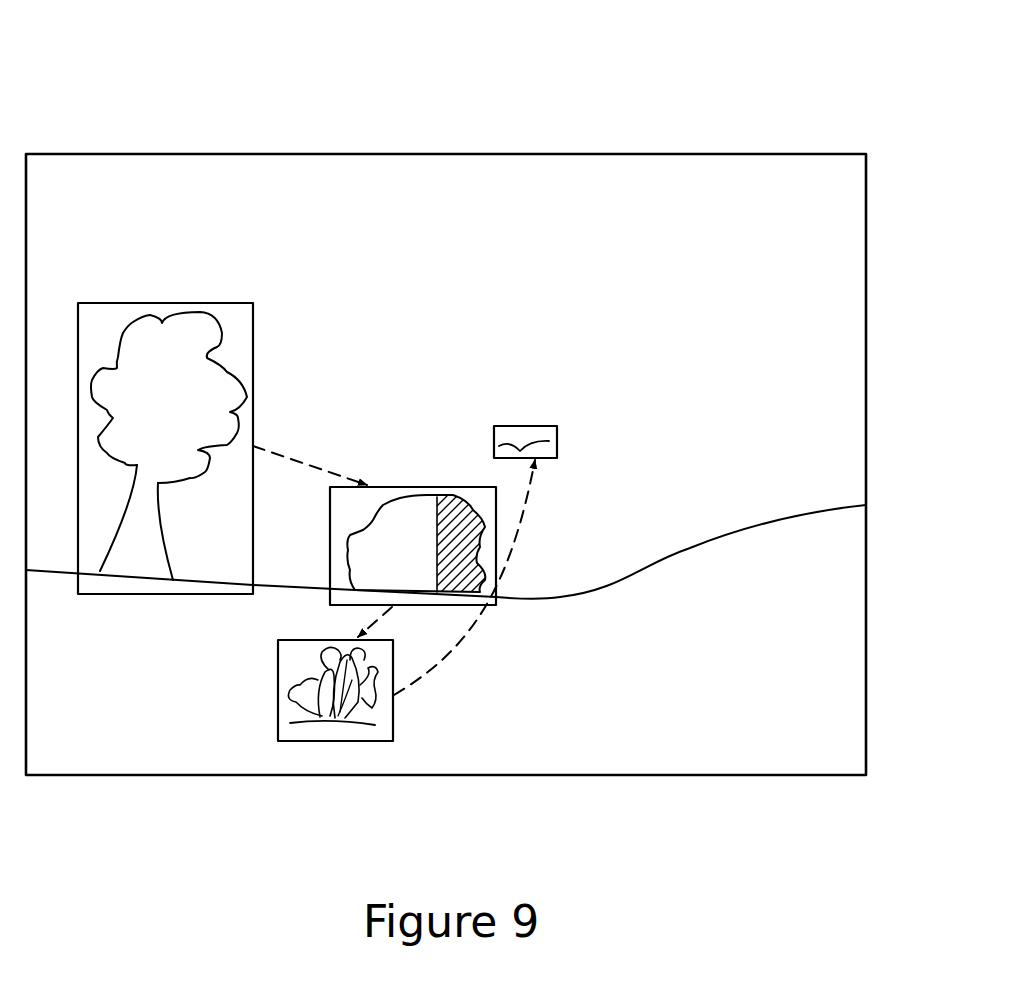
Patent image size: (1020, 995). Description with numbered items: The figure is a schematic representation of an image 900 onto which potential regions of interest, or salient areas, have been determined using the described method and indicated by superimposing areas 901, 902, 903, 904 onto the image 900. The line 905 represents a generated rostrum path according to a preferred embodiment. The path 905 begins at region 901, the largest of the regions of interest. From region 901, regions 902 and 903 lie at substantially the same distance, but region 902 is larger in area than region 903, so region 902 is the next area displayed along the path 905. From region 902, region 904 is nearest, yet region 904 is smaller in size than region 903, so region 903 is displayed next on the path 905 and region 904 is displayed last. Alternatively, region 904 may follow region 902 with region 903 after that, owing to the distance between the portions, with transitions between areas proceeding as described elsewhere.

The image 900 is at (778, 123).
The region of interest 901 is at (226, 297).
The region of interest 902 is at (505, 617).
The region of interest 903 is at (403, 738).
The region of interest 904 is at (588, 438).
The rostrum path 905 is at (323, 458).